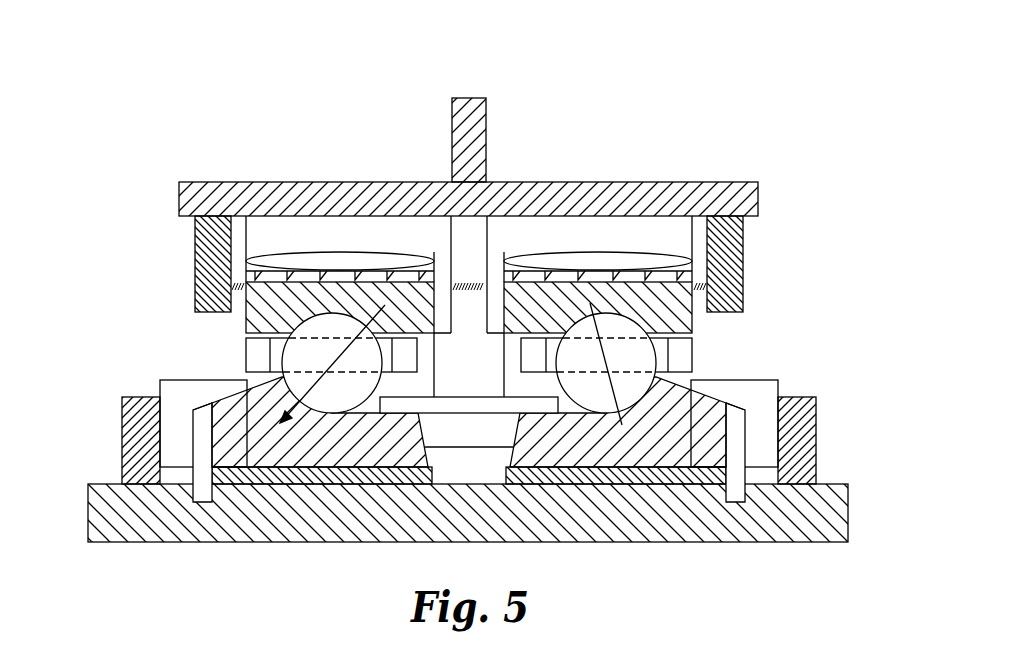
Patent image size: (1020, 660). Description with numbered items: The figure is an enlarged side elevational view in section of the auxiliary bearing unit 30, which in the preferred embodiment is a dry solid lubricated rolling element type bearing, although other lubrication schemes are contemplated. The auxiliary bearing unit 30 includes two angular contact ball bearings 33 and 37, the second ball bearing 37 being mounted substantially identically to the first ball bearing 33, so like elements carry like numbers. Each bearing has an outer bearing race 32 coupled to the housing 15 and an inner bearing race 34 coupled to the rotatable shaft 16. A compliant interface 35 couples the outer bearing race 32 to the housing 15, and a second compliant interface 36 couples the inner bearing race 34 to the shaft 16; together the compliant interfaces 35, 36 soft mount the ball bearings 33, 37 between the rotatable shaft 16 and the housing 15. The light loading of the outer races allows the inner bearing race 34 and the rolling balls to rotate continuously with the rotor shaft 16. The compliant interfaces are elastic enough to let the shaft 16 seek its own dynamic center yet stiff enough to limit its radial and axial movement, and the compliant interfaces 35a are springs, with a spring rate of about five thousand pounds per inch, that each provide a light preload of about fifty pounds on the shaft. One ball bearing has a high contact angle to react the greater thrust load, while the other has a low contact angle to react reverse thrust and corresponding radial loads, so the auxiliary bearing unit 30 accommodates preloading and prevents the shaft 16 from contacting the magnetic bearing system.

The housing 15 is at (386, 182).
The rotatable shaft 16 is at (110, 533).
The auxiliary bearing unit 30 is at (471, 304).
The outer bearing race 32 is at (257, 303).
The ball bearing 33 is at (224, 358).
The inner bearing race 34 is at (707, 442).
The compliant interface 35 is at (267, 255).
The compliant interface spring 35a is at (467, 284).
The second compliant interface 36 is at (290, 476).
The second ball bearing 37 is at (727, 362).